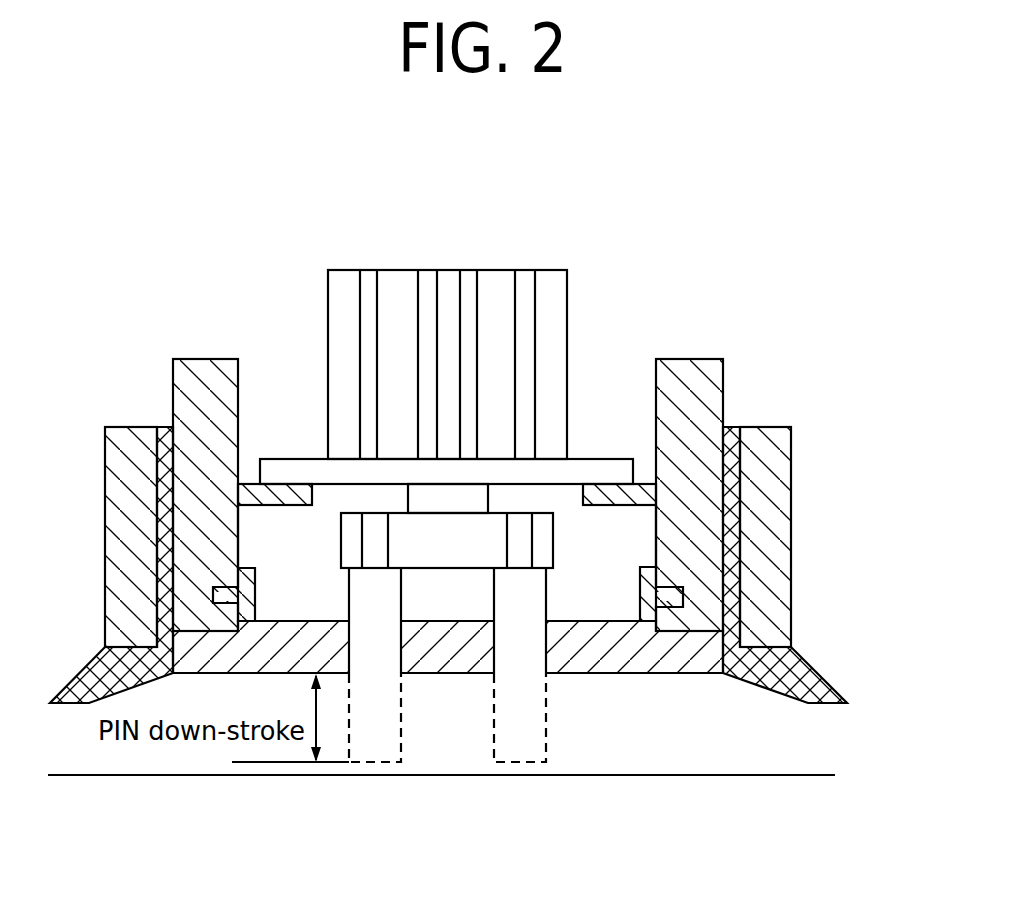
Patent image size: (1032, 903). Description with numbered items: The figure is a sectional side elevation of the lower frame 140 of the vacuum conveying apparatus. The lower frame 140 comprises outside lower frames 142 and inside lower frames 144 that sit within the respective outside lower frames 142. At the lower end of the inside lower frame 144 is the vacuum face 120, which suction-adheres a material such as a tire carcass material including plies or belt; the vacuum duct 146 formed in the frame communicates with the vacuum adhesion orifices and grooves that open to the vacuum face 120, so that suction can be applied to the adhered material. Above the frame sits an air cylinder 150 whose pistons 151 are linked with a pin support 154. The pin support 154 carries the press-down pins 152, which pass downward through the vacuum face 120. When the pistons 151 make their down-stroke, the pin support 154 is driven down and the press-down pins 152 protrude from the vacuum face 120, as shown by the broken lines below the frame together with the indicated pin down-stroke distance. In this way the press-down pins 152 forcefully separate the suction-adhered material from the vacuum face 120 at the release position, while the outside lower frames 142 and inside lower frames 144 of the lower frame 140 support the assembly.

The vacuum face 120 is at (420, 676).
The lower frame 140 is at (478, 578).
The outside lower frame 142 is at (764, 470).
The inside lower frame 144 is at (690, 372).
The vacuum duct 146 is at (592, 583).
The air cylinder 150 is at (497, 302).
The piston 151 is at (448, 500).
The press-down pin 152 is at (525, 675).
The pin support 154 is at (523, 535).